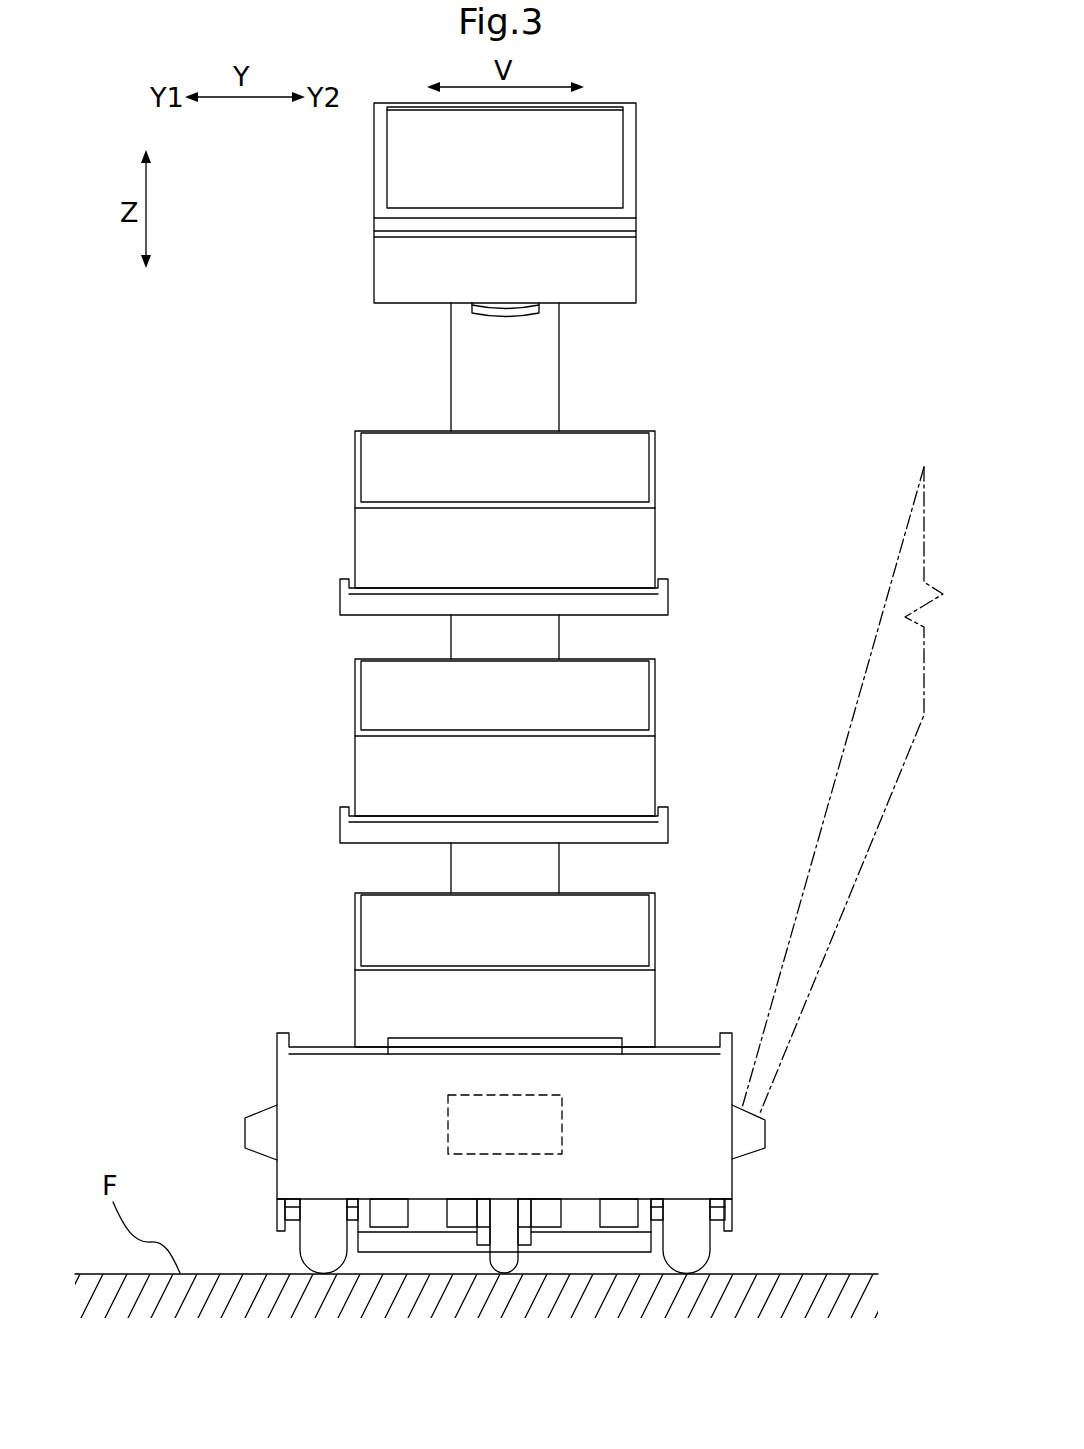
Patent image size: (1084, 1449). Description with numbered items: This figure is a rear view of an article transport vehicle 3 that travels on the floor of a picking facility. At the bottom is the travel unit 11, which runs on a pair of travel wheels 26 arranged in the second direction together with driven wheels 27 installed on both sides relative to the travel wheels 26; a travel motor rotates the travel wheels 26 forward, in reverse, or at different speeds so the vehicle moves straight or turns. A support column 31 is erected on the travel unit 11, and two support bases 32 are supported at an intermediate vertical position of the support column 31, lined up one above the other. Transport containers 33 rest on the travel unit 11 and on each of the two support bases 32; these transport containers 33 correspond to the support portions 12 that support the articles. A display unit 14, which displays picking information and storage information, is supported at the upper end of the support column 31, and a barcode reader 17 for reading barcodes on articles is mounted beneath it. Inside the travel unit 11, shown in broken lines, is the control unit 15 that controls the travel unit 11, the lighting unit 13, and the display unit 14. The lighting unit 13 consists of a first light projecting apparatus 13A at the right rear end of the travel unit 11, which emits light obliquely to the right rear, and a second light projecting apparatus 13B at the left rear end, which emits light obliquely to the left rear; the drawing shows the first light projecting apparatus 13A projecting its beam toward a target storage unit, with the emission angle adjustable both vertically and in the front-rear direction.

The article transport vehicle 3 is at (272, 477).
The travel unit 11 is at (722, 1177).
The support portions 12 is at (657, 992).
The lighting unit 13 is at (501, 1111).
The first light projecting apparatus 13A is at (765, 1133).
The second light projecting apparatus 13B is at (245, 1132).
The display unit 14 is at (636, 160).
The control unit 15 is at (562, 1130).
The barcode reader 17 is at (483, 318).
The travel wheels 26 is at (300, 1252).
The driven wheels 27 is at (519, 1262).
The support column 31 is at (551, 380).
The support bases 32 is at (668, 596).
The transport containers 33 is at (550, 707).